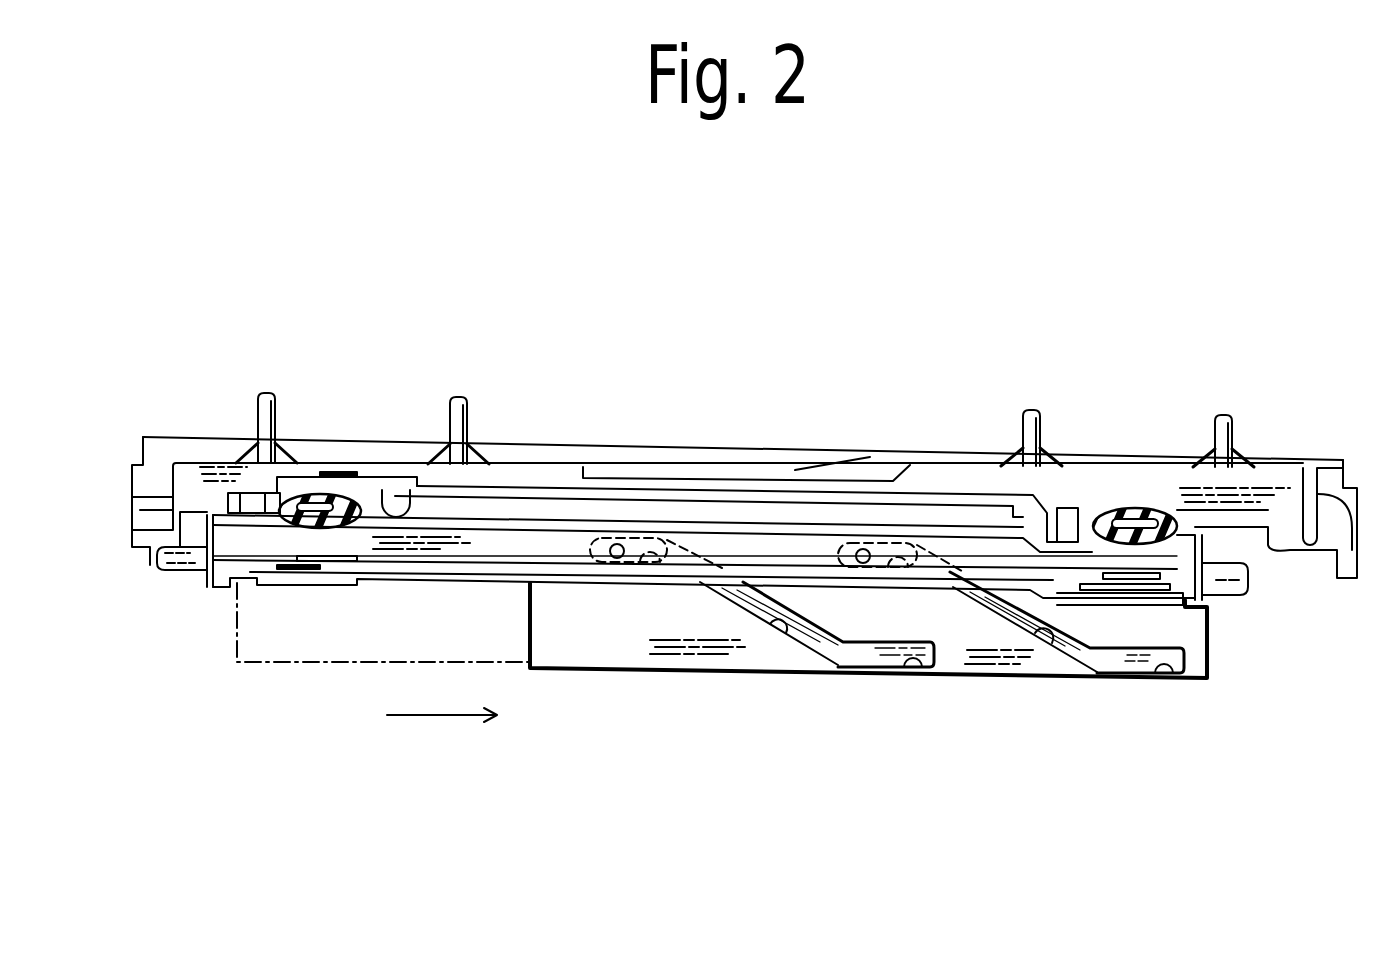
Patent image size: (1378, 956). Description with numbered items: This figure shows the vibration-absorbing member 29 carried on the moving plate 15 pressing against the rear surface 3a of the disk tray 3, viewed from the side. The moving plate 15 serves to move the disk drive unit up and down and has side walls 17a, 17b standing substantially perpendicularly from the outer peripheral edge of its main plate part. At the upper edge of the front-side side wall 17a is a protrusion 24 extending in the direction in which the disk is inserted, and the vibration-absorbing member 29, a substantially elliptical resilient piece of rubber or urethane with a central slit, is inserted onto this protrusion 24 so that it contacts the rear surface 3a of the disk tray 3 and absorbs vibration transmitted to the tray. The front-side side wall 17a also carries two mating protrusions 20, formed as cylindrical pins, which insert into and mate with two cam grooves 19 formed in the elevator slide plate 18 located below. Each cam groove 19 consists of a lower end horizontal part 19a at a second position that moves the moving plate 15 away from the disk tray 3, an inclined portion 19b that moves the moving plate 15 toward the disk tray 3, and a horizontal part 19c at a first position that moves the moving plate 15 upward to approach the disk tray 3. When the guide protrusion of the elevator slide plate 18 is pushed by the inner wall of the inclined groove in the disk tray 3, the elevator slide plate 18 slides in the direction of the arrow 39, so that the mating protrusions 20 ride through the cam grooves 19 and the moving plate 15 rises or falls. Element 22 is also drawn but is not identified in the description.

The disk tray 3 is at (690, 442).
The rear surface of the disk tray 3a is at (407, 500).
The moving plate 15 is at (374, 612).
The front-side side wall 17a is at (192, 580).
The side wall 17b is at (1228, 600).
The elevator slide plate 18 is at (700, 698).
The cam groove 19 is at (810, 660).
The lower end horizontal part 19a is at (913, 664).
The inclined portion 19b is at (786, 635).
The horizontal part 19c is at (660, 565).
The mating protrusion 20 is at (611, 559).
The stopper 22 is at (165, 575).
The protrusion 24 is at (287, 562).
The vibration-absorbing member 29 is at (305, 495).
The arrow 39 is at (430, 717).